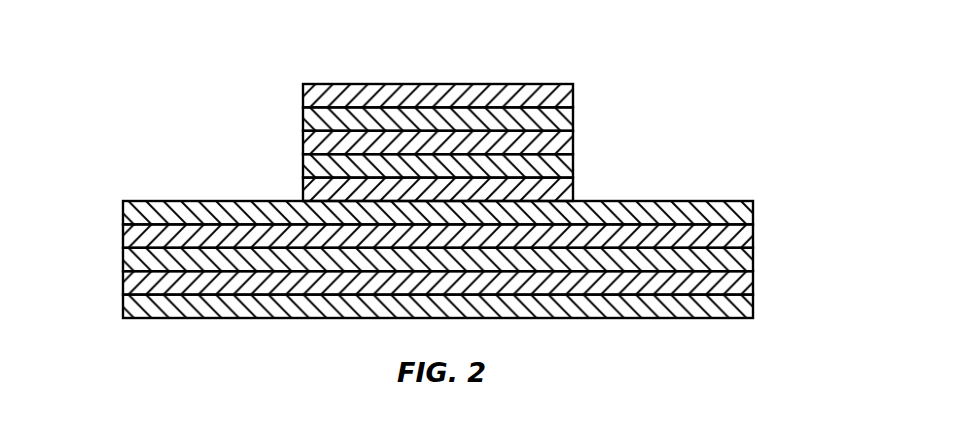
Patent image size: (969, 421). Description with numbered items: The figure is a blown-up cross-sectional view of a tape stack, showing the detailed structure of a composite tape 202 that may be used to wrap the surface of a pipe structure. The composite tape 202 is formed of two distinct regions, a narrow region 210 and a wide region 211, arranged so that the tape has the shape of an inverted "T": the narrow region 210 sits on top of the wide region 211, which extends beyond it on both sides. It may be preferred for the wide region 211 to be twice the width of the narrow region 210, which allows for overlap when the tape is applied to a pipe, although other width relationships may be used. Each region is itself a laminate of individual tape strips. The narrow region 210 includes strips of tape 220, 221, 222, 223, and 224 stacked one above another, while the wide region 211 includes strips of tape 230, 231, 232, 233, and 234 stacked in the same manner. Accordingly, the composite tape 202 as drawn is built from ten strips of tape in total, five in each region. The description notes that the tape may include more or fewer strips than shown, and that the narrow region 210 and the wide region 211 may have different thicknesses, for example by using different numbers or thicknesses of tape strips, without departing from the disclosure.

The composite tape 202 is at (336, 47).
The narrow region 210 is at (288, 84).
The wide region 211 is at (108, 201).
The strip of tape 220 is at (573, 97).
The strip of tape 221 is at (573, 120).
The strip of tape 222 is at (573, 144).
The strip of tape 223 is at (573, 167).
The strip of tape 224 is at (573, 190).
The strip of tape 230 is at (753, 214).
The strip of tape 231 is at (753, 237).
The strip of tape 232 is at (753, 260).
The strip of tape 233 is at (753, 284).
The strip of tape 234 is at (753, 307).